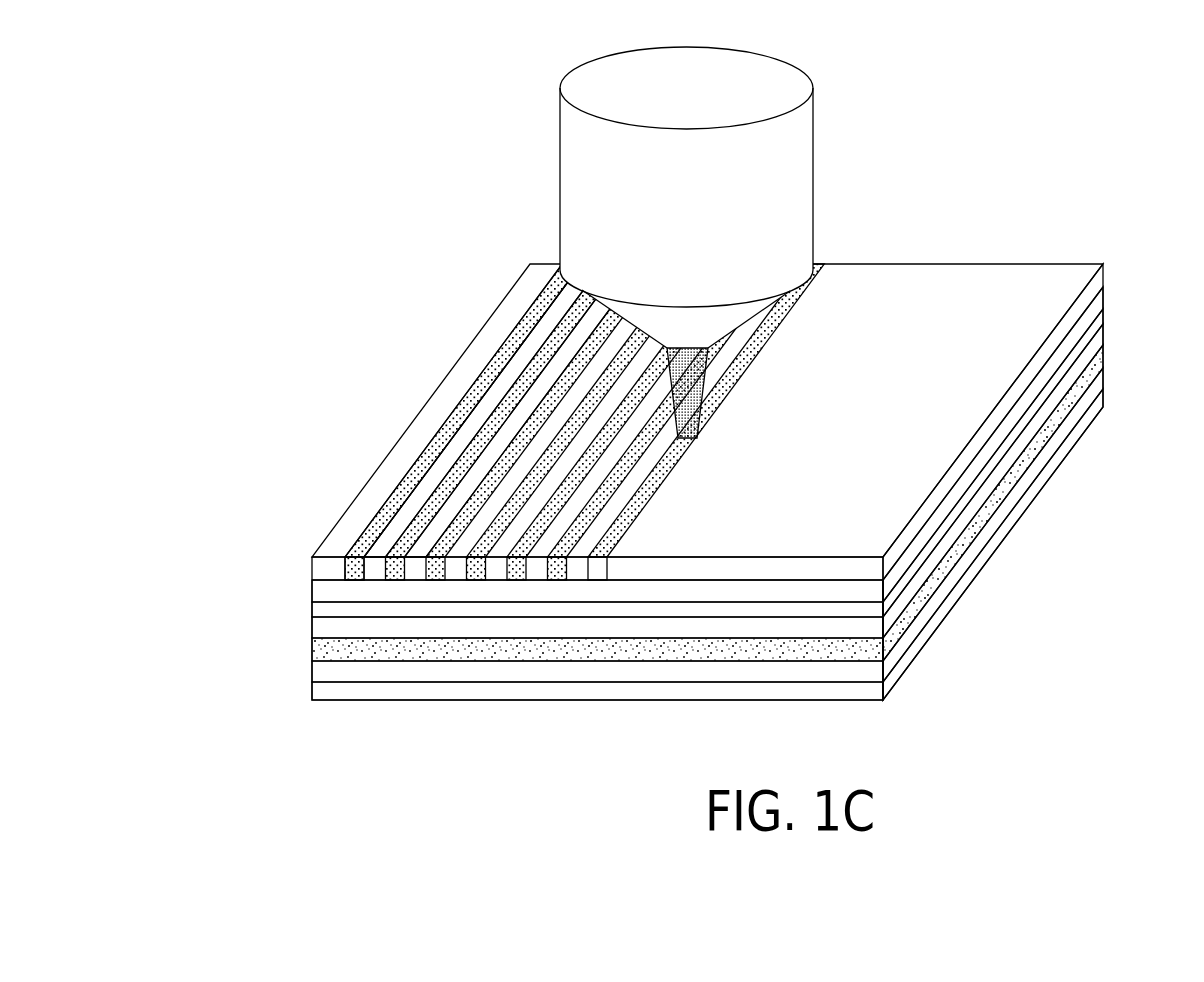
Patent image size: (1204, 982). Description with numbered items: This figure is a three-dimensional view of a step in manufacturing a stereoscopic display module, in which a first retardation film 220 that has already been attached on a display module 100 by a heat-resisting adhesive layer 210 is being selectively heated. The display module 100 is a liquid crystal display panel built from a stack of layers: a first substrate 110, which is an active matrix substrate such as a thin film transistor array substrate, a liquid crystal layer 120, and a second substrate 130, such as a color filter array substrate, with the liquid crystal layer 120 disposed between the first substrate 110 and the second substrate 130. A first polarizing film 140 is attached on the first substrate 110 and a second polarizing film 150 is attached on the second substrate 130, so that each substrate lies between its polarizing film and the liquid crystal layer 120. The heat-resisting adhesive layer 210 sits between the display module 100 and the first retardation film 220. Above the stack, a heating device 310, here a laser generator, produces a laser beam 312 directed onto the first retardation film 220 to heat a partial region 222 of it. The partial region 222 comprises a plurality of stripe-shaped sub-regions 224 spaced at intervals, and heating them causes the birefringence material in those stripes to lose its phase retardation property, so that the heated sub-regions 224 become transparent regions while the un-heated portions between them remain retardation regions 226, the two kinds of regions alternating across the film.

The display module 100 is at (1125, 509).
The first substrate 110 is at (923, 615).
The liquid crystal layer 120 is at (937, 577).
The second substrate 130 is at (948, 542).
The first polarizing film 140 is at (915, 650).
The second polarizing film 150 is at (968, 498).
The heat-resisting adhesive layer 210 is at (1018, 410).
The first retardation film 220 is at (1027, 377).
The partial region 222 is at (498, 472).
The sub-regions 224 is at (402, 538).
The retardation regions 226 is at (547, 387).
The heating device 310 is at (768, 197).
The laser beam 312 is at (697, 392).